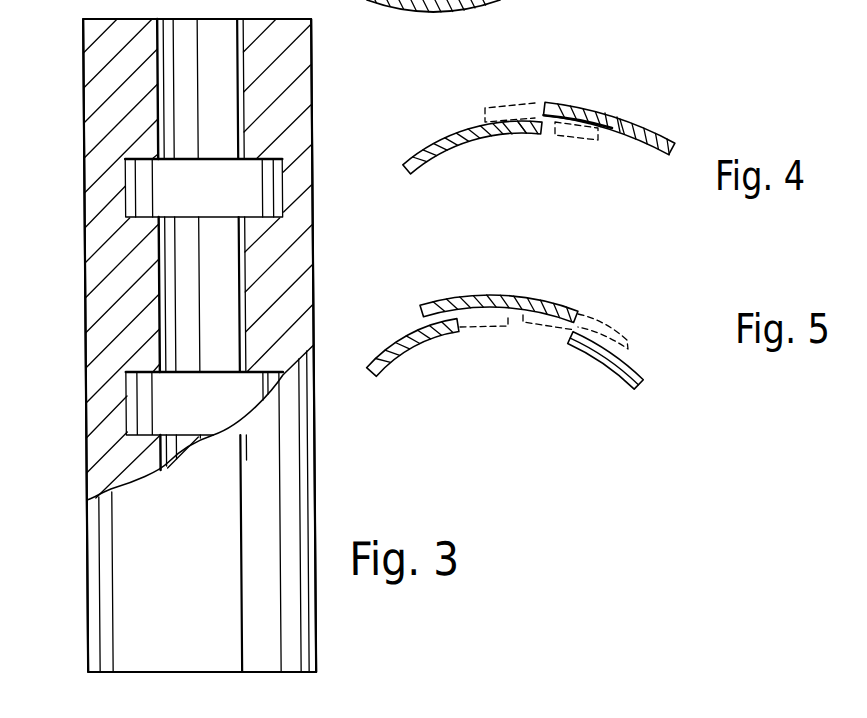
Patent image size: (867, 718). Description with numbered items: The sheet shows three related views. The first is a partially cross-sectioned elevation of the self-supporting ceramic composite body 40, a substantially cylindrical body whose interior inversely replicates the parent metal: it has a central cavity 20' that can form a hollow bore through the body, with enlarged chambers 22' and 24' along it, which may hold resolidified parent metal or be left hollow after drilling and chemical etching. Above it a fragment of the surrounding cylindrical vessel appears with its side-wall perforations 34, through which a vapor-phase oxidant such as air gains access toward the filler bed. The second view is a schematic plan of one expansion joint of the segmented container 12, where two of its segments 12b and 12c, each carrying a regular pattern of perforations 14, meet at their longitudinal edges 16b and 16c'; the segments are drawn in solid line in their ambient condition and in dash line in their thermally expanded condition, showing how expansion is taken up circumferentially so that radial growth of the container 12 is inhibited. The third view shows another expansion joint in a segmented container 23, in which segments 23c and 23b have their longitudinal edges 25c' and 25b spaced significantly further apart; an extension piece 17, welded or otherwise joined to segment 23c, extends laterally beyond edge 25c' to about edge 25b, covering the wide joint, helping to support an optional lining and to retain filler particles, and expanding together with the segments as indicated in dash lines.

In FIG. 3, the central cavity 20' is at (270, 345).
In FIG. 3, the enlarged chamber 22' is at (156, 188).
In FIG. 3, the enlarged chamber 24' is at (158, 403).
In FIG. 3, the ceramic composite body 40 is at (290, 432).
In FIG. 4, the perforations 34 is at (527, 0).
In FIG. 4, the segmented container 12 is at (557, 130).
In FIG. 4, the segment 12b is at (635, 128).
In FIG. 4, the segment 12c is at (470, 132).
In FIG. 4, the perforations 14 is at (440, 159).
In FIG. 4, the longitudinal edge 16b is at (558, 74).
In FIG. 4, the longitudinal edge 16c' is at (574, 151).
In FIG. 5, the extension piece 17 is at (504, 297).
In FIG. 5, the segmented container 23 is at (529, 324).
In FIG. 5, the segment 23b is at (632, 376).
In FIG. 5, the segment 23c is at (403, 358).
In FIG. 5, the longitudinal edge 25b is at (577, 336).
In FIG. 5, the longitudinal edge 25c' is at (487, 353).